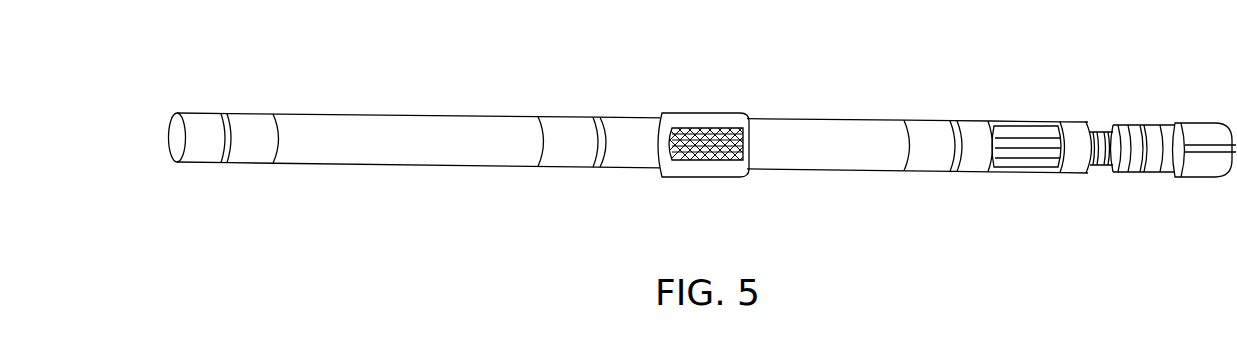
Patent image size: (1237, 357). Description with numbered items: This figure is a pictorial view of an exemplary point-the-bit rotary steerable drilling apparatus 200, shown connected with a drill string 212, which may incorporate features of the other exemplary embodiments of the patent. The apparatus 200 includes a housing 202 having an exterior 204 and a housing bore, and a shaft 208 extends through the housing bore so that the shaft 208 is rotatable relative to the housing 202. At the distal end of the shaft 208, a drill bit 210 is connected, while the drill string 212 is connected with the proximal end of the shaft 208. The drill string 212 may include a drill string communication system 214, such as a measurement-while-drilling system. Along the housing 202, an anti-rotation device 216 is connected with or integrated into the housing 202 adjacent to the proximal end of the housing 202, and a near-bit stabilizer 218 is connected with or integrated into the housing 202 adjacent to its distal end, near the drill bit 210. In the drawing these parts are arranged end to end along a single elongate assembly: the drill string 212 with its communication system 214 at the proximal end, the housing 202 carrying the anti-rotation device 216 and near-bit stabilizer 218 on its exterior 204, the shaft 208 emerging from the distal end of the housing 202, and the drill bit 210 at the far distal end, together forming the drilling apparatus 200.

The point-the-bit rotary steerable drilling apparatus 200 is at (812, 166).
The housing 202 is at (860, 125).
The exterior 204 is at (783, 142).
The shaft 208 is at (1103, 171).
The drill bit 210 is at (1200, 160).
The drill string 212 is at (225, 163).
The drill string communication system 214 is at (435, 160).
The anti-rotation device 216 is at (697, 112).
The near-bit stabilizer 218 is at (1013, 120).